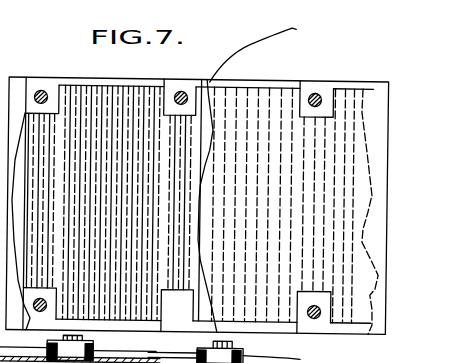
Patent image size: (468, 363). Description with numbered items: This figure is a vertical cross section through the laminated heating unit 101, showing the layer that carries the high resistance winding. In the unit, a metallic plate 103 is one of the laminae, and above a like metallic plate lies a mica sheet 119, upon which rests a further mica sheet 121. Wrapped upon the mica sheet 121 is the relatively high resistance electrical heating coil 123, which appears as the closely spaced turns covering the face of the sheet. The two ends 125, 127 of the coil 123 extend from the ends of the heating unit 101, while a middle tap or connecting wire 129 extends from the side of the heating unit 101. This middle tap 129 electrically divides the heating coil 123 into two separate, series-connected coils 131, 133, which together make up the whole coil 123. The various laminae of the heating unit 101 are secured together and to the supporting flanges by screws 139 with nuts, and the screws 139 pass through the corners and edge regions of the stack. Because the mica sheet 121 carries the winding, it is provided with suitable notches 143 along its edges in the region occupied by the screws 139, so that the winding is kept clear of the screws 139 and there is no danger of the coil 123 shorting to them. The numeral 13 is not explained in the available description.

The heating unit 101 is at (304, 336).
The metallic plate 103 is at (345, 352).
The substrate 13 is at (27, 334).
The mica sheet 119 is at (186, 91).
The mica sheet 121 is at (104, 94).
The electrical heating coil 123 is at (116, 84).
The end of the coil 125 is at (20, 221).
The end of the coil 127 is at (320, 315).
The middle tap 129 is at (248, 44).
The coil 131 is at (130, 94).
The coil 133 is at (288, 67).
The screws 139 is at (38, 93).
The notches 143 is at (198, 80).